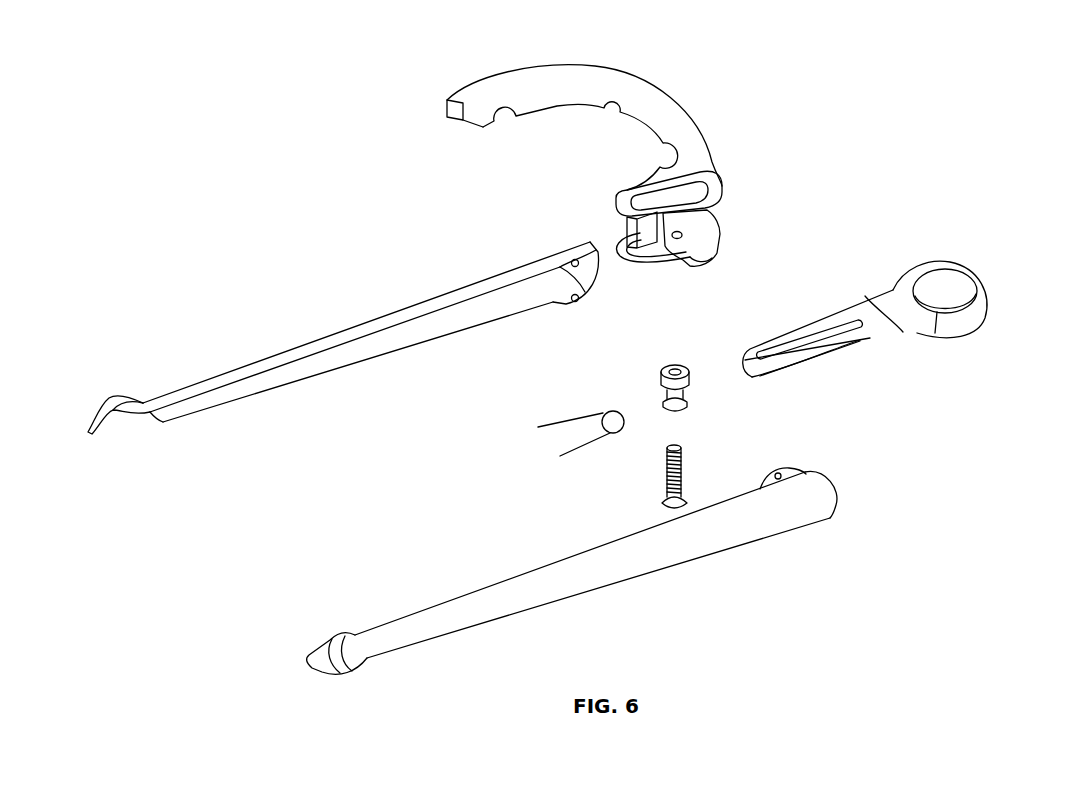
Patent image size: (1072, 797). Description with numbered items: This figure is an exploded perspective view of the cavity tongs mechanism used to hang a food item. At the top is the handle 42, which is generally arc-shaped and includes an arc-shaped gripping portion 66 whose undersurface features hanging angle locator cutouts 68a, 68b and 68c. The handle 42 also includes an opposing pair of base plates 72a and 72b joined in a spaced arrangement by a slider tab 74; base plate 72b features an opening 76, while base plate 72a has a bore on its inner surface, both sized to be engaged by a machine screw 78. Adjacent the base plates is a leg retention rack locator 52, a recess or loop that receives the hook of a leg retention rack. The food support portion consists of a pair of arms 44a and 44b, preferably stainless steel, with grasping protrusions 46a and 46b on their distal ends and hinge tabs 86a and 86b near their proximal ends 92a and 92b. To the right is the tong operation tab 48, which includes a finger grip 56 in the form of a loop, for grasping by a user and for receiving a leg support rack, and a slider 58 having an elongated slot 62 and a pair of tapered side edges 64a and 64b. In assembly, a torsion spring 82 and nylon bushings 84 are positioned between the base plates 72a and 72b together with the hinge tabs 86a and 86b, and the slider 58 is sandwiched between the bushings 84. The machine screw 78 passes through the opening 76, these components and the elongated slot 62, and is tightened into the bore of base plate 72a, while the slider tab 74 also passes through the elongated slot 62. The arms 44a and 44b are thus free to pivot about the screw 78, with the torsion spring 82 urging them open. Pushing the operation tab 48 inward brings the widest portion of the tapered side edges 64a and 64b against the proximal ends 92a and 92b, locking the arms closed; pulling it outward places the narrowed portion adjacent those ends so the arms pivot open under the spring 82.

The handle 42 is at (608, 164).
The arm 44a is at (604, 585).
The arm 44b is at (346, 338).
The grasping protrusion 46a is at (348, 676).
The grasping protrusion 46b is at (96, 416).
The tong operation tab 48 is at (893, 314).
The leg retention rack locator 52 is at (720, 255).
The finger grip 56 is at (986, 291).
The slider 58 is at (829, 376).
The elongated slot 62 is at (822, 330).
The tapered side edge 64a is at (855, 355).
The tapered side edge 64b is at (838, 311).
The arc-shaped gripping portion 66 is at (546, 70).
The hanging angle locator cutout 68a is at (505, 124).
The hanging angle locator cutout 68b is at (611, 114).
The hanging angle locator cutout 68c is at (670, 156).
The base plate 72a is at (617, 202).
The base plate 72b is at (640, 262).
The slider tab 74 is at (620, 233).
The opening 76 is at (684, 236).
The machine screw 78 is at (660, 479).
The torsion spring 82 is at (580, 458).
The bushings 84 is at (690, 405).
The hinge tab 86a is at (780, 468).
The hinge tab 86b is at (563, 302).
The proximal end 92a is at (838, 500).
The proximal end 92b is at (599, 274).